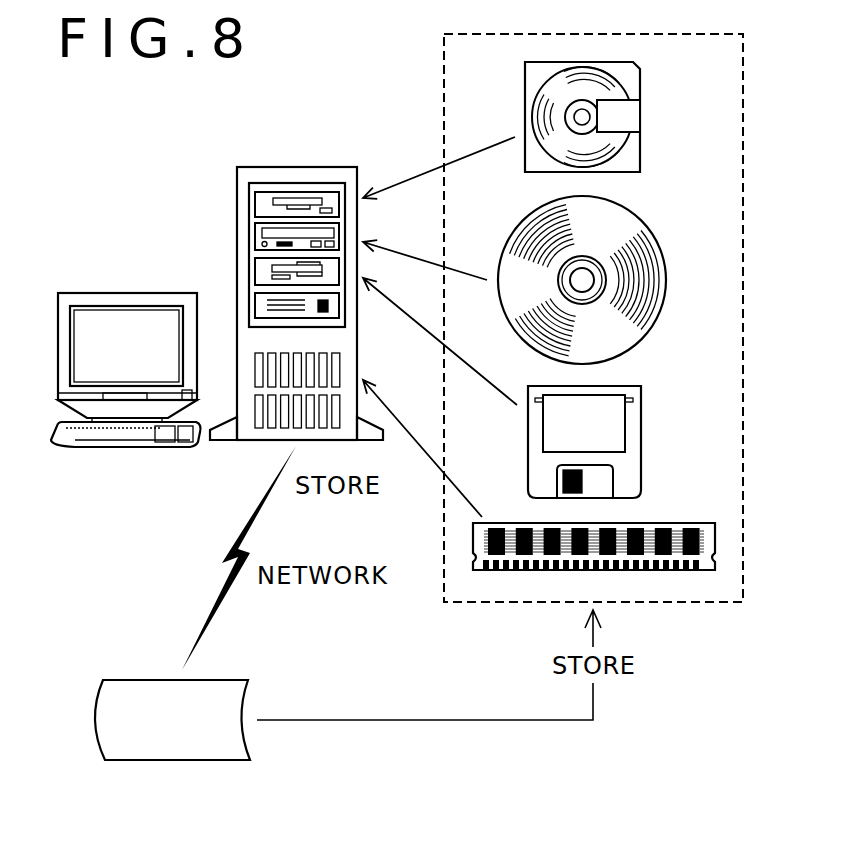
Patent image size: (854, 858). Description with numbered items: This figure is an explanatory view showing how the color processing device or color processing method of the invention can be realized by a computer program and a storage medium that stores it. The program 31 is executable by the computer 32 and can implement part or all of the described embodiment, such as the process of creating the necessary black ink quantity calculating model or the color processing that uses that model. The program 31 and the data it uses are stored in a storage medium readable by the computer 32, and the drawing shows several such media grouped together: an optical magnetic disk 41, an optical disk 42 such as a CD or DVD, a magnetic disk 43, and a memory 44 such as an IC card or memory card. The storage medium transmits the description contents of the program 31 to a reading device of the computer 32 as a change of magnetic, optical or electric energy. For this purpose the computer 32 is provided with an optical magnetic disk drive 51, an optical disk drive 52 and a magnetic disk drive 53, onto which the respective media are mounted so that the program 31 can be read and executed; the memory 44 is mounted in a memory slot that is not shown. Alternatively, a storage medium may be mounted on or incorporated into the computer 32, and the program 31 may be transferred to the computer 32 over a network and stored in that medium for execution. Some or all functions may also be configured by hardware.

The program 31 is at (131, 680).
The computer 32 is at (304, 167).
The optical magnetic disk 41 is at (640, 87).
The optical disk 42 is at (655, 237).
The magnetic disk 43 is at (641, 428).
The memory 44 is at (692, 523).
The optical magnetic disk drive 51 is at (255, 200).
The optical disk drive 52 is at (255, 236).
The magnetic disk drive 53 is at (255, 272).